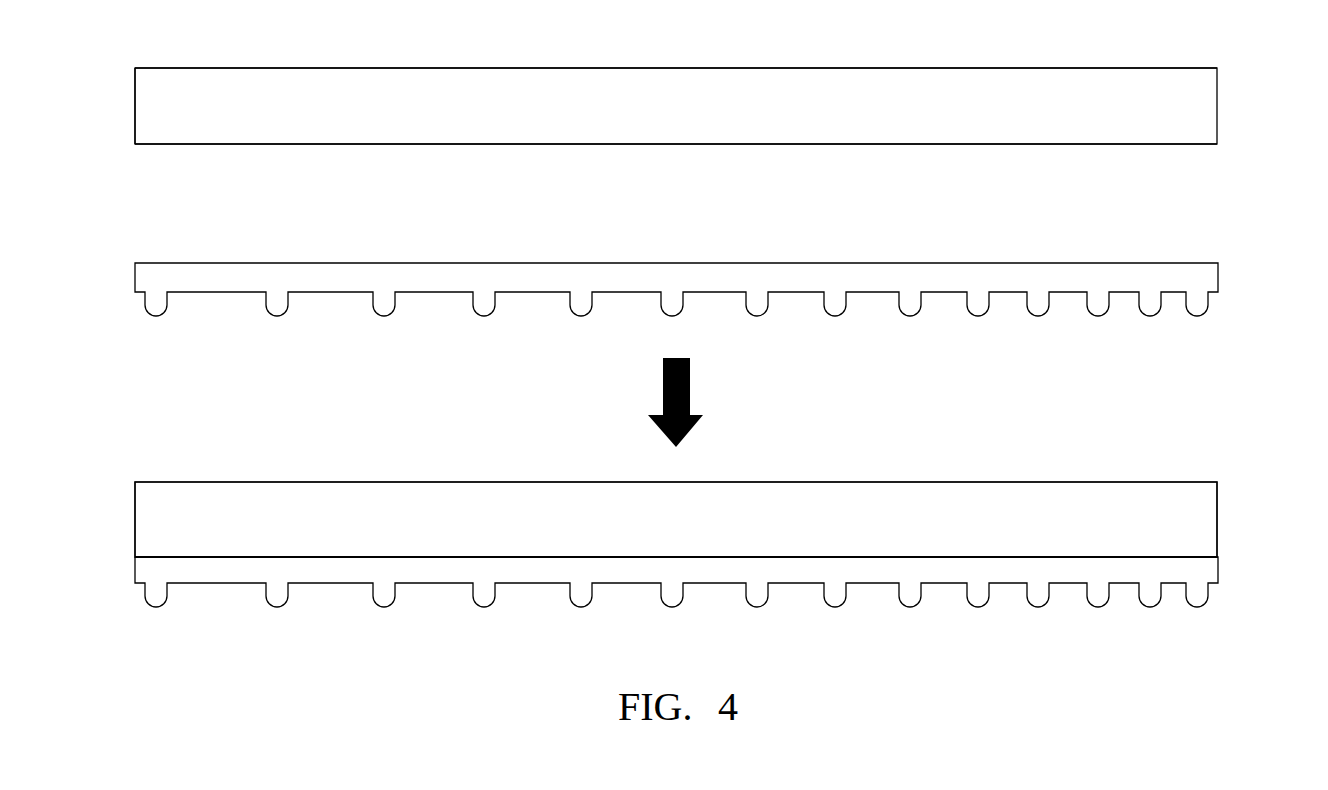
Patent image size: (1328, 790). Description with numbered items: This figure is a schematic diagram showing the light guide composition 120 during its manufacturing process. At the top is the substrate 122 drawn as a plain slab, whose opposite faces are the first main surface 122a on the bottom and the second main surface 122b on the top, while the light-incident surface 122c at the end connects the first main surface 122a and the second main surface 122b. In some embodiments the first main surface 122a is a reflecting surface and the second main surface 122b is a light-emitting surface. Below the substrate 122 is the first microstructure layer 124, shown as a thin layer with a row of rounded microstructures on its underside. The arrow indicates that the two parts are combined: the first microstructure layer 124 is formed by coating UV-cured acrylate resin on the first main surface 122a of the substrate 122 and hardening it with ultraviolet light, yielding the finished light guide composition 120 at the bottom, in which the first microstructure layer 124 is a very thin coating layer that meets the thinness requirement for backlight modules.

The light guide composition 120 is at (1236, 526).
The substrate 122 is at (1236, 107).
The first main surface 122a is at (615, 144).
The second main surface 122b is at (613, 68).
The light-incident surface 122c is at (143, 105).
The first microstructure layer 124 is at (1236, 278).